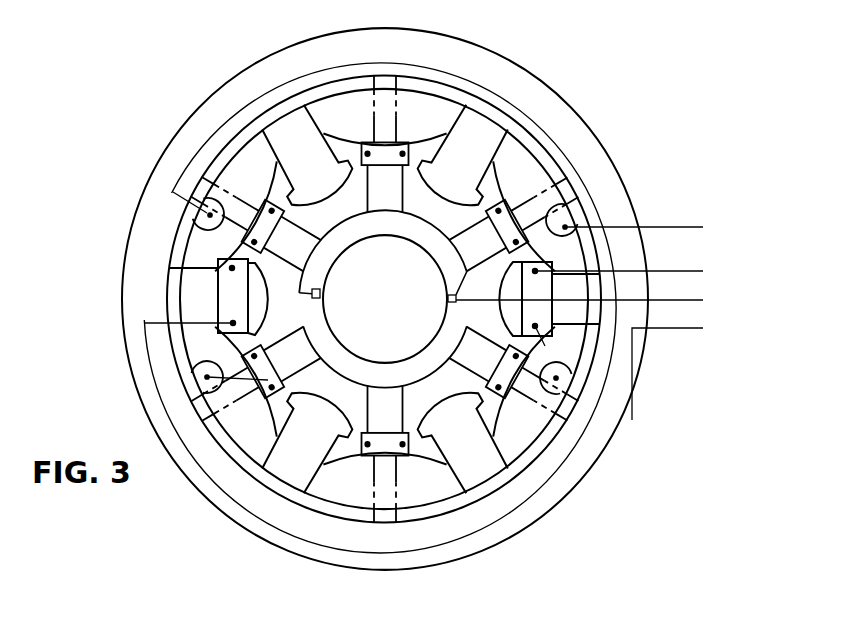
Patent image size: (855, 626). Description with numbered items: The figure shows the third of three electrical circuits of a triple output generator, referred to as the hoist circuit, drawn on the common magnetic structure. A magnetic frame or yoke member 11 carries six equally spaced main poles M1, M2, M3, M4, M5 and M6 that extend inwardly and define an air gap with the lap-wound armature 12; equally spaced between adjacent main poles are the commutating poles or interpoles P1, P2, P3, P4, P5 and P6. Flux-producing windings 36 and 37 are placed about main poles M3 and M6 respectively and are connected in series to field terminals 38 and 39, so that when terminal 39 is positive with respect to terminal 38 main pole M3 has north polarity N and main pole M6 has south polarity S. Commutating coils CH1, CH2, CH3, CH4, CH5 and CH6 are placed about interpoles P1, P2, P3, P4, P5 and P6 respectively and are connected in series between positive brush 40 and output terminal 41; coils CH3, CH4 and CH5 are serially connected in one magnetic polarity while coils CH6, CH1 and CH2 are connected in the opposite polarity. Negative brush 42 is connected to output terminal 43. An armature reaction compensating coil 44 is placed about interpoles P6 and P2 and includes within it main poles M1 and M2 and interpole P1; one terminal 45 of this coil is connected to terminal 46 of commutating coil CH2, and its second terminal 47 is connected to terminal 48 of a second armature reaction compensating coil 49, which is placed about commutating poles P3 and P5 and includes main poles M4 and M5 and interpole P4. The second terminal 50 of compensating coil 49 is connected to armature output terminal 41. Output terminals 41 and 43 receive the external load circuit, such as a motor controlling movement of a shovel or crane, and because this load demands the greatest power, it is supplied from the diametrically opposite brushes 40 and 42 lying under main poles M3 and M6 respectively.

The magnetic frame or yoke member 11 is at (258, 70).
The armature 12 is at (352, 244).
The flux-producing winding 36 is at (231, 261).
The flux-producing winding 37 is at (545, 252).
The field terminal 38 is at (683, 370).
The field terminal 39 is at (634, 272).
The positive brush 40 is at (314, 289).
The output terminal 41 is at (649, 228).
The negative brush 42 is at (452, 293).
The output terminal 43 is at (595, 301).
The armature reaction compensating coil 44 is at (350, 506).
The terminal of compensating coil 45 is at (206, 372).
The terminal of commutating coil 46 is at (254, 352).
The second terminal of compensating coil 47 is at (559, 372).
The terminal of second compensating coil 48 is at (193, 219).
The second armature reaction compensating coil 49 is at (356, 80).
The second terminal of compensating coil 50 is at (572, 236).
The interpole P1 is at (366, 453).
The interpole P2 is at (234, 399).
The interpole P3 is at (250, 210).
The interpole P4 is at (397, 131).
The interpole P5 is at (510, 208).
The interpole P6 is at (515, 376).
The main pole M1 is at (453, 372).
The main pole M2 is at (330, 371).
The main pole M3 is at (212, 266).
The main pole M4 is at (329, 184).
The main pole M5 is at (441, 184).
The main pole M6 is at (508, 292).
The commutating coil CH1 is at (375, 431).
The commutating coil CH2 is at (276, 389).
The commutating coil CH3 is at (270, 232).
The commutating coil CH4 is at (384, 186).
The commutating coil CH5 is at (484, 228).
The commutating coil CH6 is at (498, 352).
The north magnetic polarity N is at (254, 294).
The south magnetic polarity S is at (512, 300).